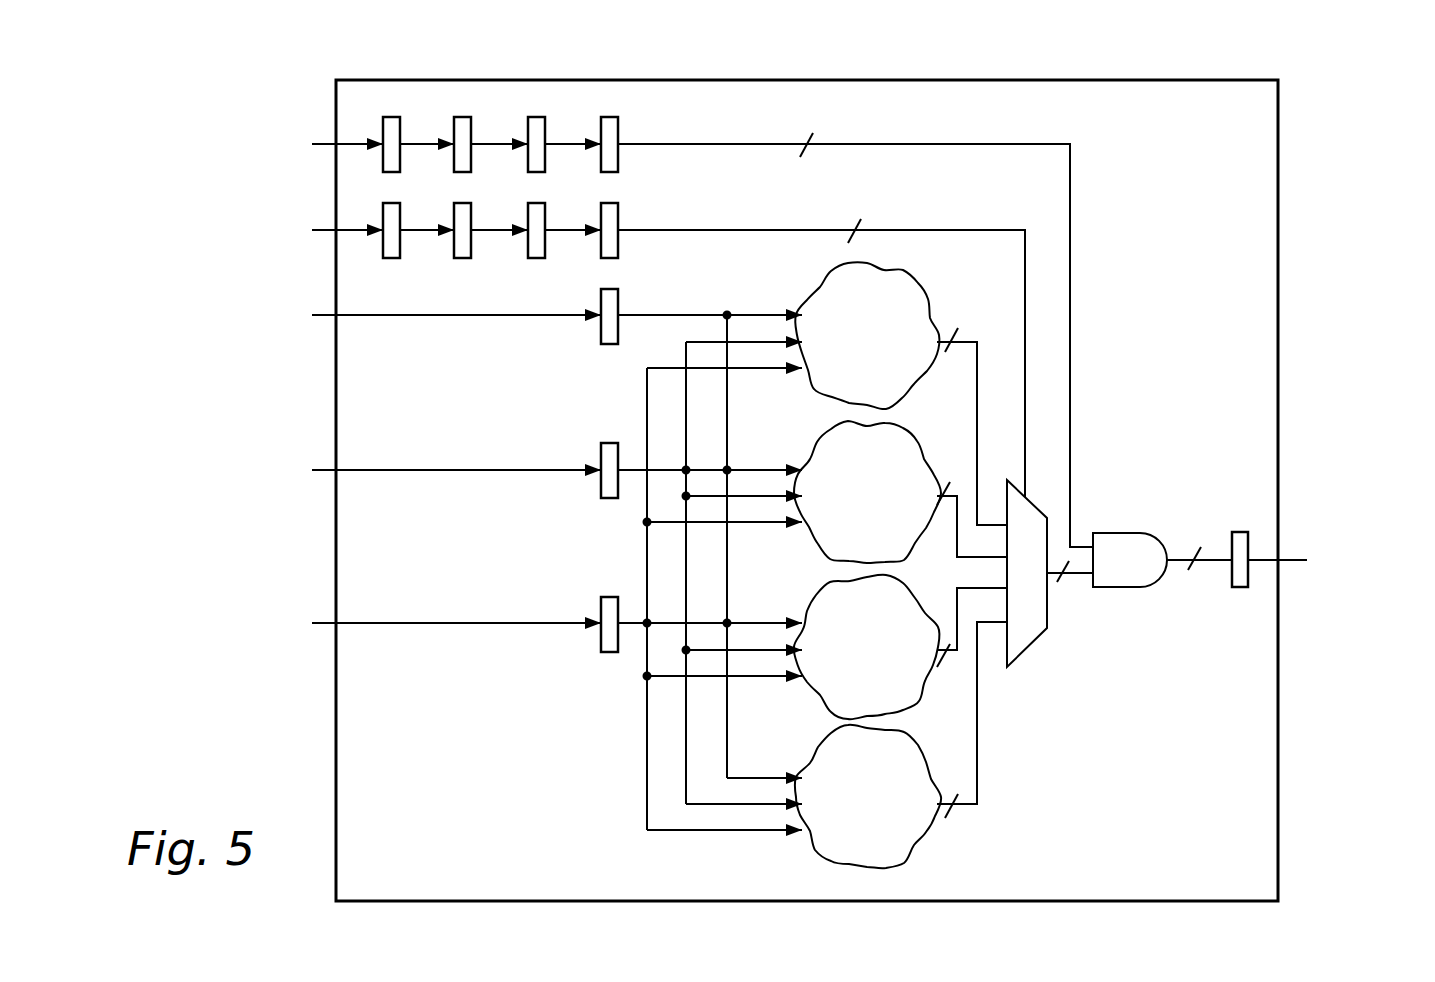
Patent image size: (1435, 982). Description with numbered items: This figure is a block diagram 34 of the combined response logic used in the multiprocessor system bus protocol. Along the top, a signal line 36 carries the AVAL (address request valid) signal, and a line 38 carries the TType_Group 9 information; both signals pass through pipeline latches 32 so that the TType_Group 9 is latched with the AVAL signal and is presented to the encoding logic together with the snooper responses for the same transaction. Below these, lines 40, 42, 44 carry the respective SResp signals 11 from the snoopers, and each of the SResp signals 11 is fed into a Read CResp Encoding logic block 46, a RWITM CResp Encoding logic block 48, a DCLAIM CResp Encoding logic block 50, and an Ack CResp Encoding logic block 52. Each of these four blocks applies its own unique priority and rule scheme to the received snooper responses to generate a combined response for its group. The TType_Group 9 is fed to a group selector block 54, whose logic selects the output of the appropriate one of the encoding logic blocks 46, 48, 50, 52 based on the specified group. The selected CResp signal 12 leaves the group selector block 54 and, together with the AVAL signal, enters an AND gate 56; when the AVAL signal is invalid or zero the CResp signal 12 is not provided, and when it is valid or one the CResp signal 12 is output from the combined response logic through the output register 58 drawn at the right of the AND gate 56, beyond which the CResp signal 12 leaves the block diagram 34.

The TType_Group 9 is at (208, 200).
The SResp signals 11 is at (210, 285).
The CResp signal 12 is at (1355, 598).
The pipeline latches 32 is at (454, 164).
The block diagram 34 is at (1311, 134).
The signal line 36 is at (737, 144).
The line 38 is at (737, 230).
The line 40 is at (648, 315).
The line 42 is at (496, 470).
The line 44 is at (488, 623).
The Read CResp Encoding logic block 46 is at (906, 300).
The RWITM CResp Encoding logic block 48 is at (908, 455).
The DCLAIM CResp Encoding logic block 50 is at (906, 608).
The Ack CResp Encoding logic block 52 is at (906, 762).
The group selector block 54 is at (1042, 514).
The AND gate 56 is at (1138, 533).
The output register 58 is at (1240, 532).